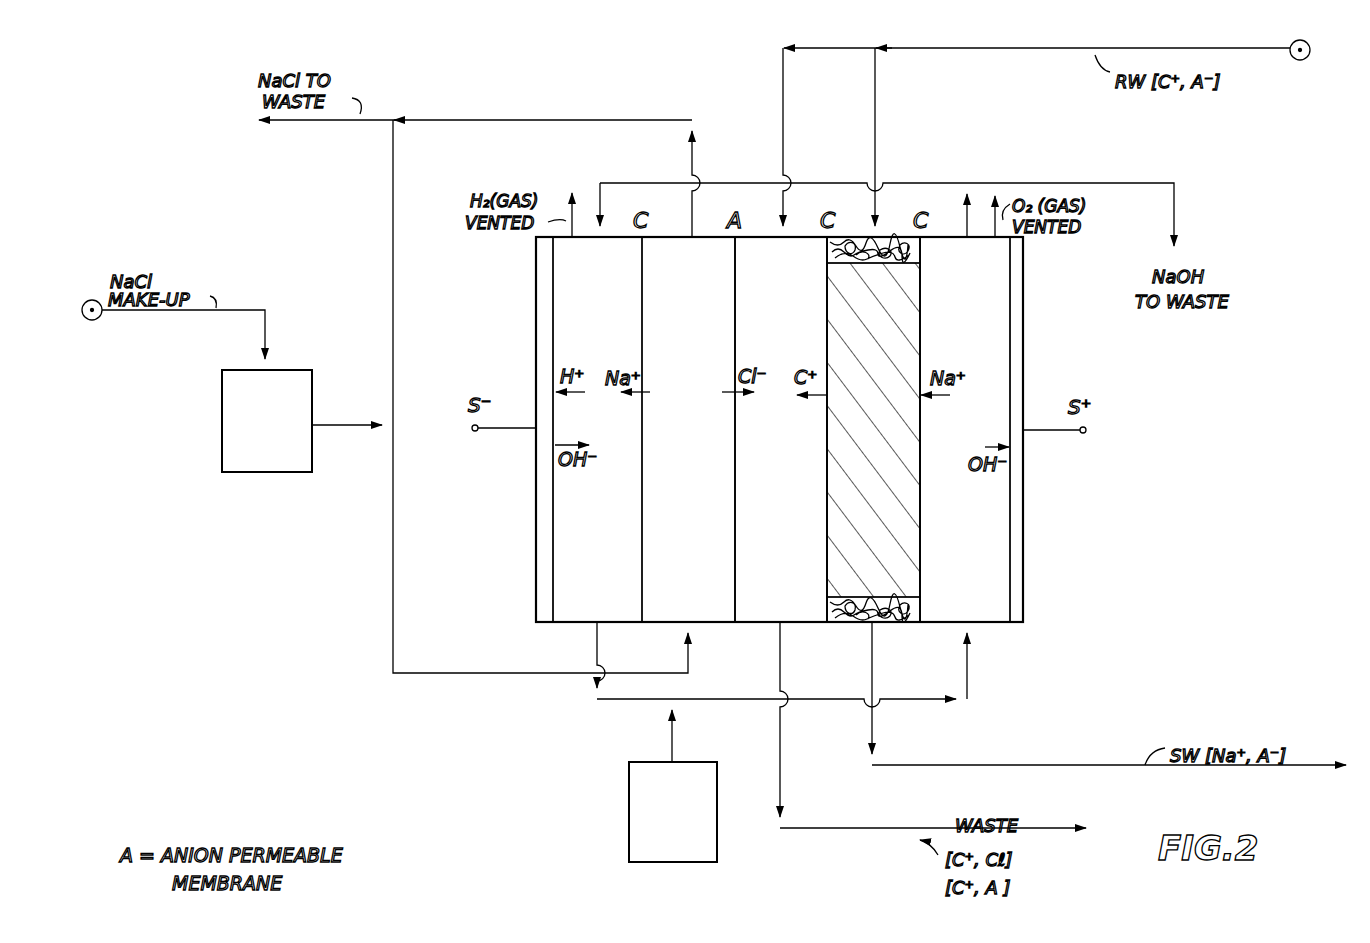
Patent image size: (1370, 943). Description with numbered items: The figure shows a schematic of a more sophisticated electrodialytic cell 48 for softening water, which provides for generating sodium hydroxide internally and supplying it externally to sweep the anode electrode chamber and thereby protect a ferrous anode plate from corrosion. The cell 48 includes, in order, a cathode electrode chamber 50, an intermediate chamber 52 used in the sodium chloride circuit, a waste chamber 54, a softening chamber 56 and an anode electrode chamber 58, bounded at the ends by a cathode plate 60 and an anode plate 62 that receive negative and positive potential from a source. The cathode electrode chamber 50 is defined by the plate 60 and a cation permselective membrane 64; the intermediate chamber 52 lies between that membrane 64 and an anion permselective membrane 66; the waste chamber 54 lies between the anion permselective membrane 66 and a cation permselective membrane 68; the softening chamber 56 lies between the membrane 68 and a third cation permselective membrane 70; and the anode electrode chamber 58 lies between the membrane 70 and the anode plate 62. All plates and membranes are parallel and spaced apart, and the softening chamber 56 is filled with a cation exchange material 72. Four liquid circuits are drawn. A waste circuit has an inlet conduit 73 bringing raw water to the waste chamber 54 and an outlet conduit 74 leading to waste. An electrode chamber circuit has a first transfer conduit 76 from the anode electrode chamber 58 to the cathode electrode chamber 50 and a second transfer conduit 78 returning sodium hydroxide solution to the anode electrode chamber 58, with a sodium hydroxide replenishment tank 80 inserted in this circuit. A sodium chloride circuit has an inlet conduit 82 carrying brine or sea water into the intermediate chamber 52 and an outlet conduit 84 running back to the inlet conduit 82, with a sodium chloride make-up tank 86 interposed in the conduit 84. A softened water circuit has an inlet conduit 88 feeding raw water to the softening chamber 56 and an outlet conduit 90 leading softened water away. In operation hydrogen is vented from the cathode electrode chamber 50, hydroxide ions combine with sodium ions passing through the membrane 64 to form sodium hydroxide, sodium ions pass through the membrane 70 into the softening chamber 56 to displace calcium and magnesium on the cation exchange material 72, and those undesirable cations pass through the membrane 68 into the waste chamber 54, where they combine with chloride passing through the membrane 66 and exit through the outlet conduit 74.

The electrodialytic cell 48 is at (1096, 483).
The cathode electrode chamber 50 is at (566, 579).
The intermediate chamber 52 is at (716, 610).
The waste chamber 54 is at (800, 610).
The softening chamber 56 is at (900, 610).
The anode electrode chamber 58 is at (986, 610).
The cathode plate 60 is at (536, 537).
The anode plate 62 is at (1023, 590).
The cation permselective membrane 64 is at (642, 330).
The anion permselective membrane 66 is at (735, 490).
The cation permselective membrane 68 is at (827, 308).
The third cation permselective membrane 70 is at (920, 306).
The cation exchange material 72 is at (920, 549).
The inlet conduit 73 is at (783, 90).
The outlet conduit 74 is at (824, 834).
The first transfer conduit 76 is at (915, 183).
The second transfer conduit 78 is at (612, 712).
The sodium hydroxide replenishment tank 80 is at (634, 866).
The inlet conduit 82 is at (410, 680).
The outlet conduit 84 is at (506, 118).
The sodium chloride make-up tank 86 is at (230, 475).
The inlet conduit 88 is at (875, 108).
The outlet conduit 90 is at (950, 764).